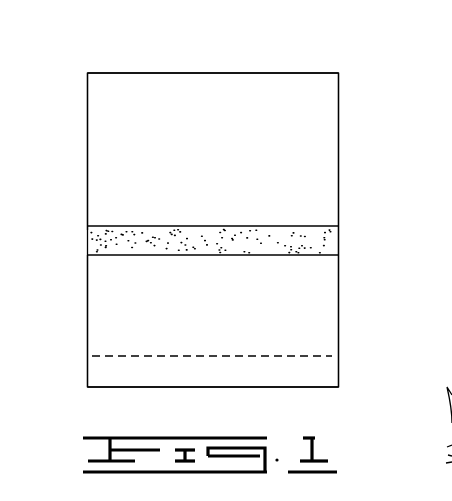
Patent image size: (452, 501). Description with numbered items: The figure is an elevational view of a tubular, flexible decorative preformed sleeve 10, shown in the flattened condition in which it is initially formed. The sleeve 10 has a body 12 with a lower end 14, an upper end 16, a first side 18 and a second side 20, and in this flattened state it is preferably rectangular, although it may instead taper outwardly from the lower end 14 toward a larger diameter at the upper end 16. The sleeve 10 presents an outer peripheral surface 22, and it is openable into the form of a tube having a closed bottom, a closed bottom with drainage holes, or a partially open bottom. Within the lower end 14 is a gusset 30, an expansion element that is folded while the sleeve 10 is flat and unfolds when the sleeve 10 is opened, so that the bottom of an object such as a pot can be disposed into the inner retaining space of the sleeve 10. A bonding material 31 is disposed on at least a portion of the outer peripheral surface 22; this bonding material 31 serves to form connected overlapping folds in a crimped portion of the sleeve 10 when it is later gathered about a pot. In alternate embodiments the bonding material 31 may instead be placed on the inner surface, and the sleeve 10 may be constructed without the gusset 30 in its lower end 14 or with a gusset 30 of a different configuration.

The sleeve 10 is at (380, 74).
The body 12 is at (87, 145).
The lower end 14 is at (263, 387).
The upper end 16 is at (239, 73).
The first side 18 is at (87, 313).
The second side 20 is at (339, 200).
The outer peripheral surface 22 is at (317, 128).
The gusset 30 is at (293, 357).
The bonding material 31 is at (318, 240).